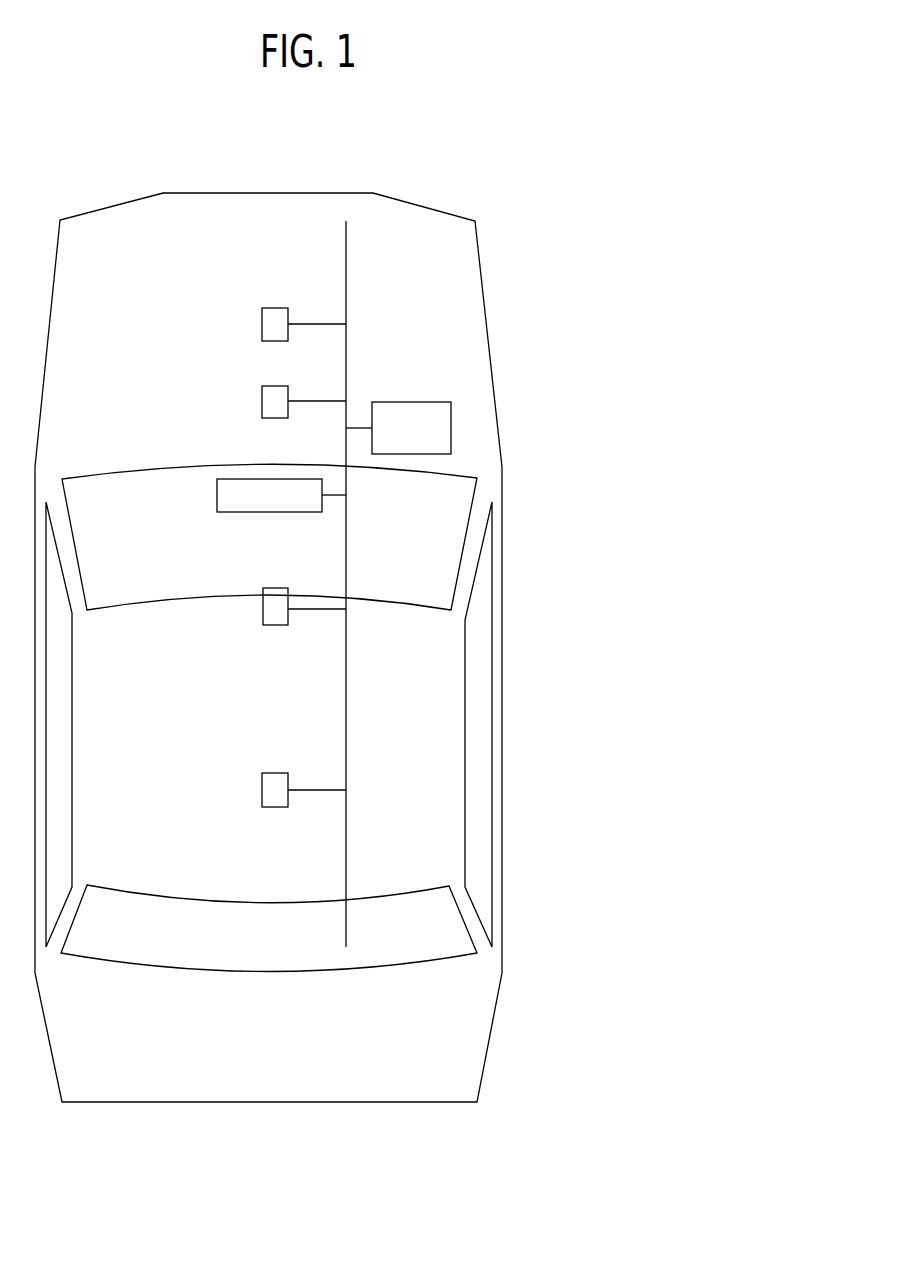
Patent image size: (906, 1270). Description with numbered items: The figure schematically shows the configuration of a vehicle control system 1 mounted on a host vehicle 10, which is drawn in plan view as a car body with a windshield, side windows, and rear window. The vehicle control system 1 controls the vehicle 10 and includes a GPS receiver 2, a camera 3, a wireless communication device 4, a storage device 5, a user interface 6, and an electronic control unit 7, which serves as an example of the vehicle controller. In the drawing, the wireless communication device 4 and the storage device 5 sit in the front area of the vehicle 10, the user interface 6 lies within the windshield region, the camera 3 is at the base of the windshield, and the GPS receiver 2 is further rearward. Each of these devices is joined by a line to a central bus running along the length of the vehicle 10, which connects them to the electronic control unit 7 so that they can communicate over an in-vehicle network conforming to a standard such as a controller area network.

The vehicle control system 1 is at (744, 972).
The GPS receiver 2 is at (267, 808).
The camera 3 is at (268, 626).
The wireless communication device 4 is at (268, 341).
The storage device 5 is at (268, 418).
The user interface 6 is at (232, 512).
The electronic control unit 7 is at (451, 417).
The host vehicle 10 is at (502, 958).